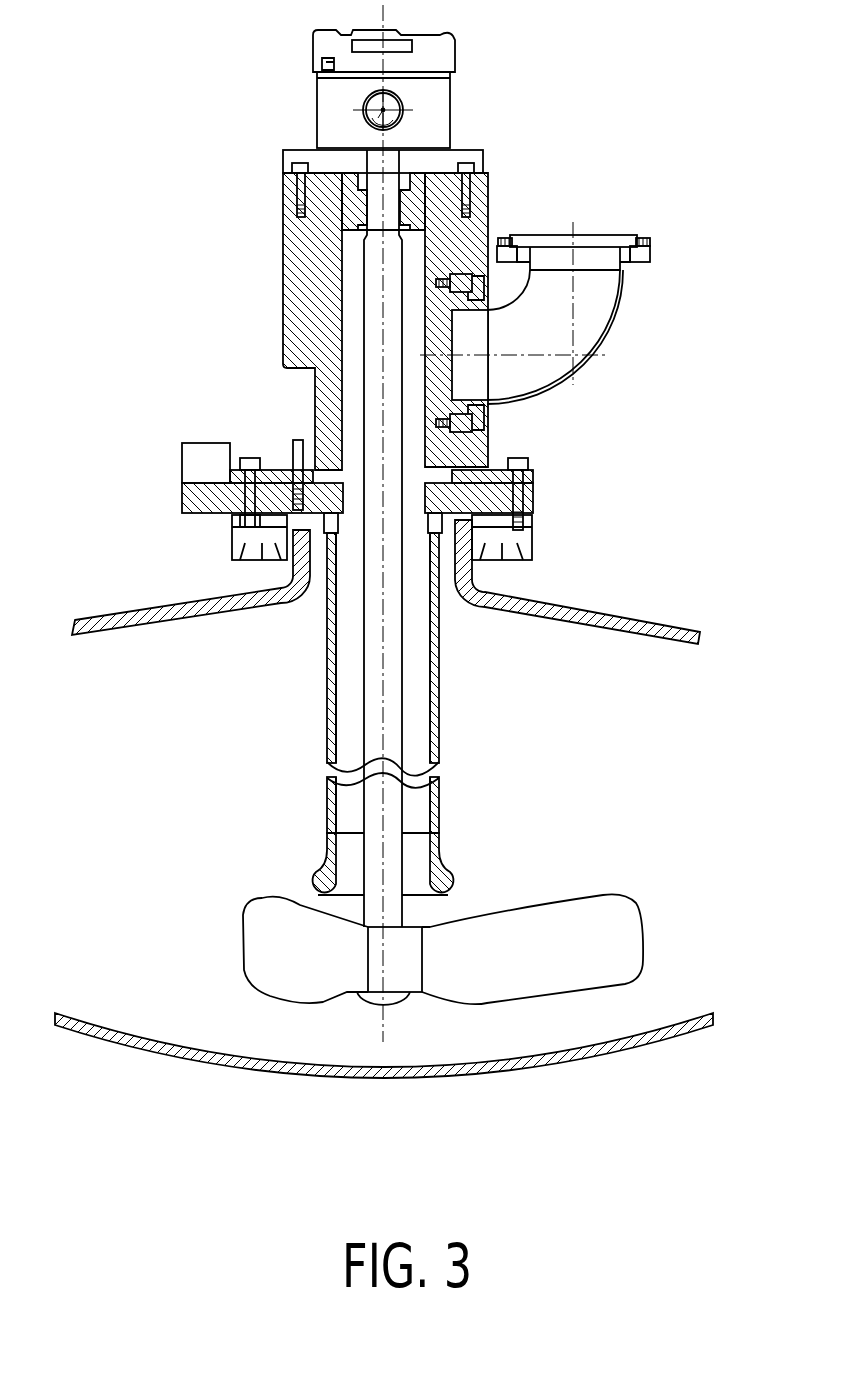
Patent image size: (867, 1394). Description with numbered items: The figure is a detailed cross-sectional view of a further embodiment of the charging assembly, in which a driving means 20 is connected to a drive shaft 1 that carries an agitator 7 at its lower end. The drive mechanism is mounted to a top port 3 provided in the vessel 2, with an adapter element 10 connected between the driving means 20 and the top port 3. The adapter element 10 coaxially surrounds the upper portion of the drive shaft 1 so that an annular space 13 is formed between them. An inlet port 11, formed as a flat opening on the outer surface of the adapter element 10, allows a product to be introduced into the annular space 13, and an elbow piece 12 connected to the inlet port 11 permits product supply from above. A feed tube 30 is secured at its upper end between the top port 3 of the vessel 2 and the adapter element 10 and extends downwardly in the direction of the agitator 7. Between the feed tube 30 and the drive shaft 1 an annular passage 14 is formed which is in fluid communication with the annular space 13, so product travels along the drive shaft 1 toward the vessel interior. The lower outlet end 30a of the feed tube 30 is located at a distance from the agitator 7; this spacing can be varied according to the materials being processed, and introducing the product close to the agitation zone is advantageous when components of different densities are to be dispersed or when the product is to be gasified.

The drive shaft 1 is at (393, 641).
The vessel 2 is at (655, 606).
The top port 3 is at (500, 547).
The agitator 7 is at (587, 940).
The adapter element 10 is at (217, 263).
The inlet port 11 is at (436, 398).
The elbow piece 12 is at (588, 307).
The annular space 13 is at (353, 405).
The annular passage 14 is at (347, 682).
The driving means 20 is at (500, 45).
The feed tube 30 is at (433, 710).
The lower outlet end 30a is at (457, 883).